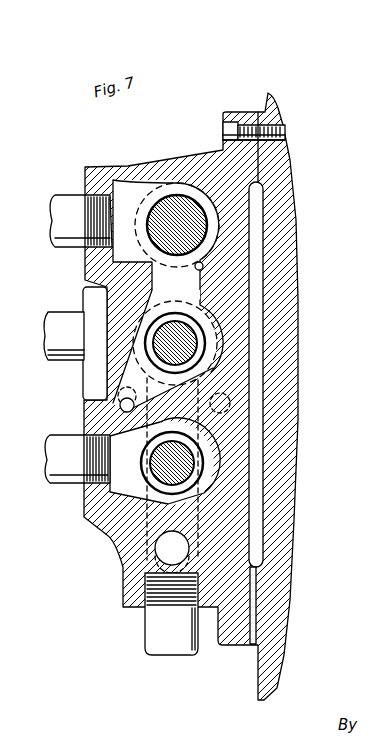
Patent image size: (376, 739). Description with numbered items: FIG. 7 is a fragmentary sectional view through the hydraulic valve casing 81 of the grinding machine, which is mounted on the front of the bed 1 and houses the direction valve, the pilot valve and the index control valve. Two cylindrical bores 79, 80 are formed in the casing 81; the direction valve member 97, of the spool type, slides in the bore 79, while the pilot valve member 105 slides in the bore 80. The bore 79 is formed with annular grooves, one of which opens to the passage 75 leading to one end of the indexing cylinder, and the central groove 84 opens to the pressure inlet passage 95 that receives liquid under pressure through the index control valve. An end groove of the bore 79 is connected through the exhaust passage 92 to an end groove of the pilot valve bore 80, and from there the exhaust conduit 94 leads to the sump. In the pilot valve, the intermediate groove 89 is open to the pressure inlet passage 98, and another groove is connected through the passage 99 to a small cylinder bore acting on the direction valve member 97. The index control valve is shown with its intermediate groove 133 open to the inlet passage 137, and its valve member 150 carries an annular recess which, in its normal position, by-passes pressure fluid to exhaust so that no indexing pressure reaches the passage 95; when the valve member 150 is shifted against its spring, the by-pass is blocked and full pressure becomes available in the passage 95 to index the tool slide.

The bed 1 is at (287, 500).
The passage 75 is at (72, 315).
The cylindrical bore 79 is at (206, 333).
The cylindrical bore 80 is at (165, 461).
The casing 81 is at (112, 537).
The central groove 84 is at (246, 330).
The intermediate groove 89 is at (180, 505).
The exhaust passage 92 is at (249, 360).
The exhaust conduit 94 is at (152, 642).
The pressure inlet passage 95 is at (203, 268).
The valve member 97 is at (158, 327).
The pressure inlet passage 98 is at (68, 472).
The passage 99 is at (223, 398).
The valve member 105 is at (197, 470).
The intermediate groove 133 is at (166, 168).
The inlet passage 137 is at (88, 205).
The valve member 150 is at (196, 195).